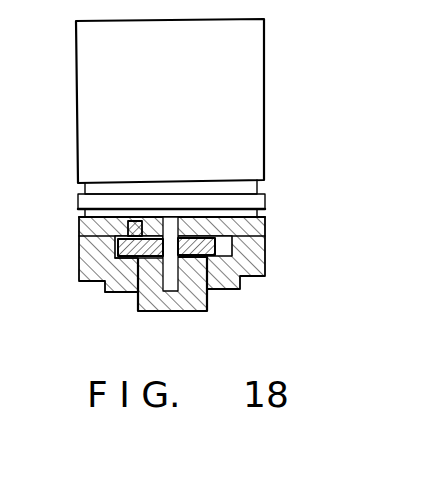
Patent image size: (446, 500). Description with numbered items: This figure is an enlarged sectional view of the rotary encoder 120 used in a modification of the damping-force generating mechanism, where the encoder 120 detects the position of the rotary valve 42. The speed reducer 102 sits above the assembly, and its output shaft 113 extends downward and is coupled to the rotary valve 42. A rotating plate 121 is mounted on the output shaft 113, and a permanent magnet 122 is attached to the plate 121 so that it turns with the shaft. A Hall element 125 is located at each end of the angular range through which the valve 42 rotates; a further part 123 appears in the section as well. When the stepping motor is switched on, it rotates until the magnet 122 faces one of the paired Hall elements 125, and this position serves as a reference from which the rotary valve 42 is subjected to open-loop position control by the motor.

The speed reducer 102 is at (258, 91).
The output shaft 113 is at (173, 223).
The top plate 123 is at (270, 219).
The Hall element 125 is at (133, 227).
The rotating plate 121 is at (220, 252).
The encoder 120 is at (220, 254).
The permanent magnet 122 is at (121, 263).
The rotary valve 42 is at (160, 305).